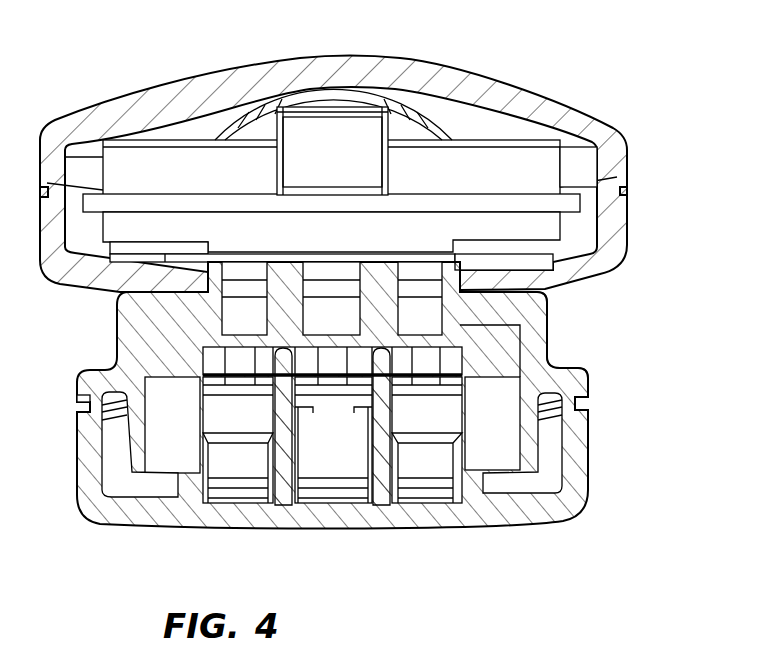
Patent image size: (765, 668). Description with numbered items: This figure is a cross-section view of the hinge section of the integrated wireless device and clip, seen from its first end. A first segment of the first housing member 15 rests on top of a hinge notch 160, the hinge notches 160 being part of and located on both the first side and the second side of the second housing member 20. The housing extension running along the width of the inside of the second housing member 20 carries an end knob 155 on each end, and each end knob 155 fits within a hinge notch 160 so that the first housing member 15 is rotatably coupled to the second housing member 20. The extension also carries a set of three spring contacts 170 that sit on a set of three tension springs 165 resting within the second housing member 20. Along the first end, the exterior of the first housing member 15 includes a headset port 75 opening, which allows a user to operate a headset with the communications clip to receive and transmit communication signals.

The first housing member 15 is at (647, 232).
The second housing member 20 is at (597, 510).
The headset port 75 is at (300, 130).
The end knob 155 is at (588, 380).
The hinge notch 160 is at (547, 317).
The tension springs 165 is at (235, 462).
The spring contacts 170 is at (230, 315).